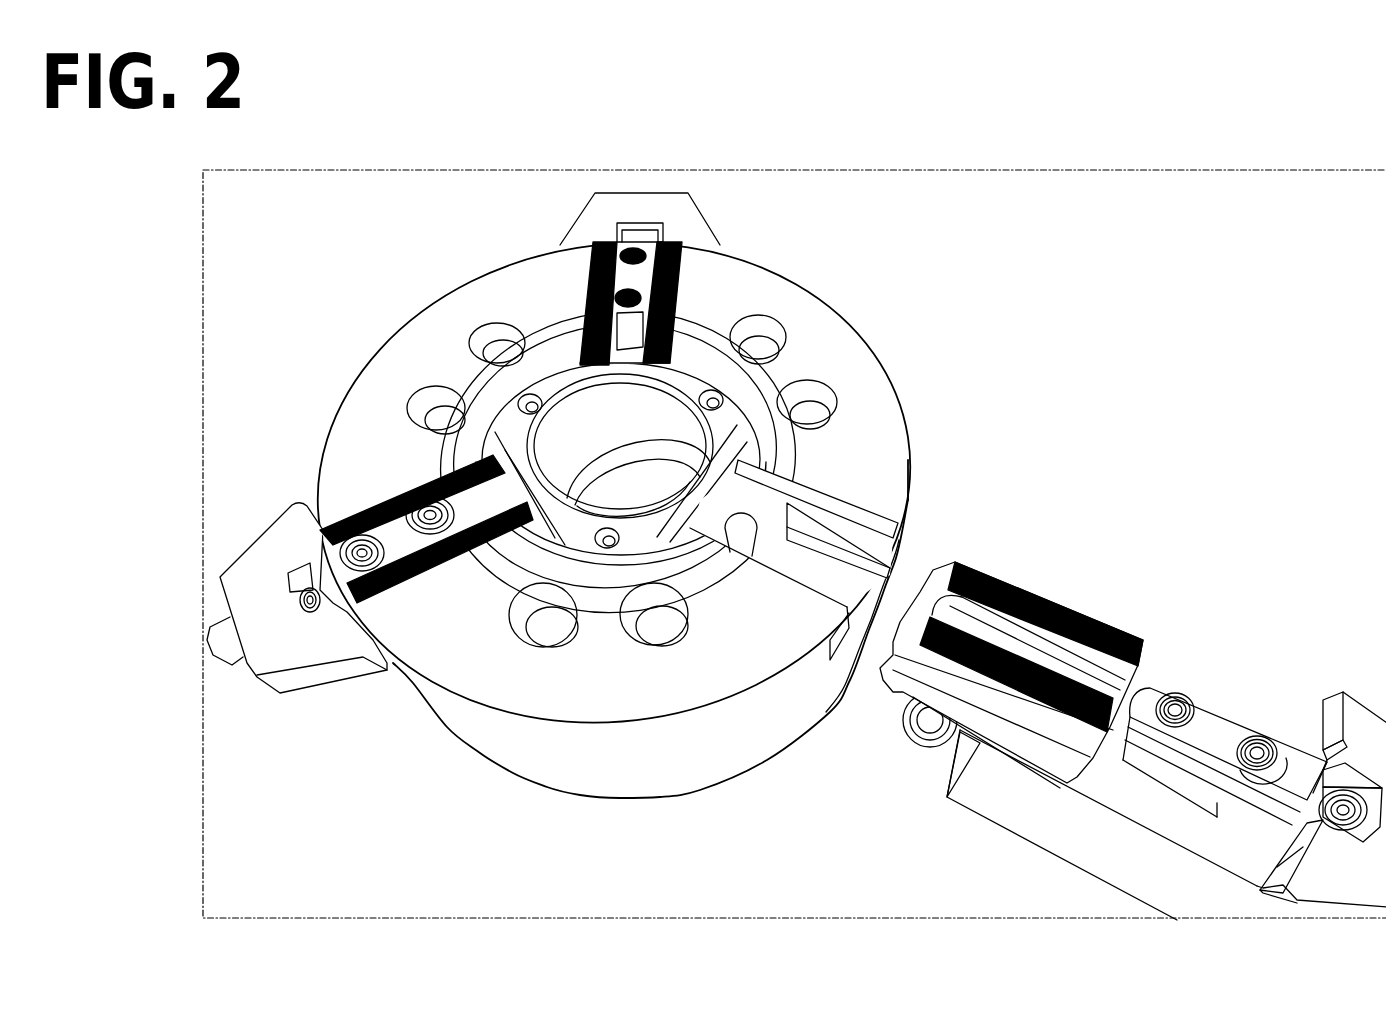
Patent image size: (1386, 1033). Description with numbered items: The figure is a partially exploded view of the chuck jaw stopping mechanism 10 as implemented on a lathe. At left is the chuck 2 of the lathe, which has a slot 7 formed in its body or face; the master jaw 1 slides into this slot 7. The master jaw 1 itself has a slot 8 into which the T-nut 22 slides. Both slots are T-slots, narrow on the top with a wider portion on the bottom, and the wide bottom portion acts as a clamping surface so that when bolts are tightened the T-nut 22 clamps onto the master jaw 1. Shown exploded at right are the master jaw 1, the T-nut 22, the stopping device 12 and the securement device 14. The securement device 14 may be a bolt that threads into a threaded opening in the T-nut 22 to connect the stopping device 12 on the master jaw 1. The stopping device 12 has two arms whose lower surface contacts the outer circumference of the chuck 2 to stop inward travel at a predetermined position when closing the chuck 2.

The chuck 2 is at (393, 340).
The slot 7 is at (893, 553).
The chuck jaw stopping mechanism 10 is at (1133, 679).
The master jaw 1 is at (1077, 607).
The slot 8 is at (1123, 683).
The T-nut 22 is at (1217, 710).
The stopping device 12 is at (1323, 687).
The securement device 14 is at (1327, 793).